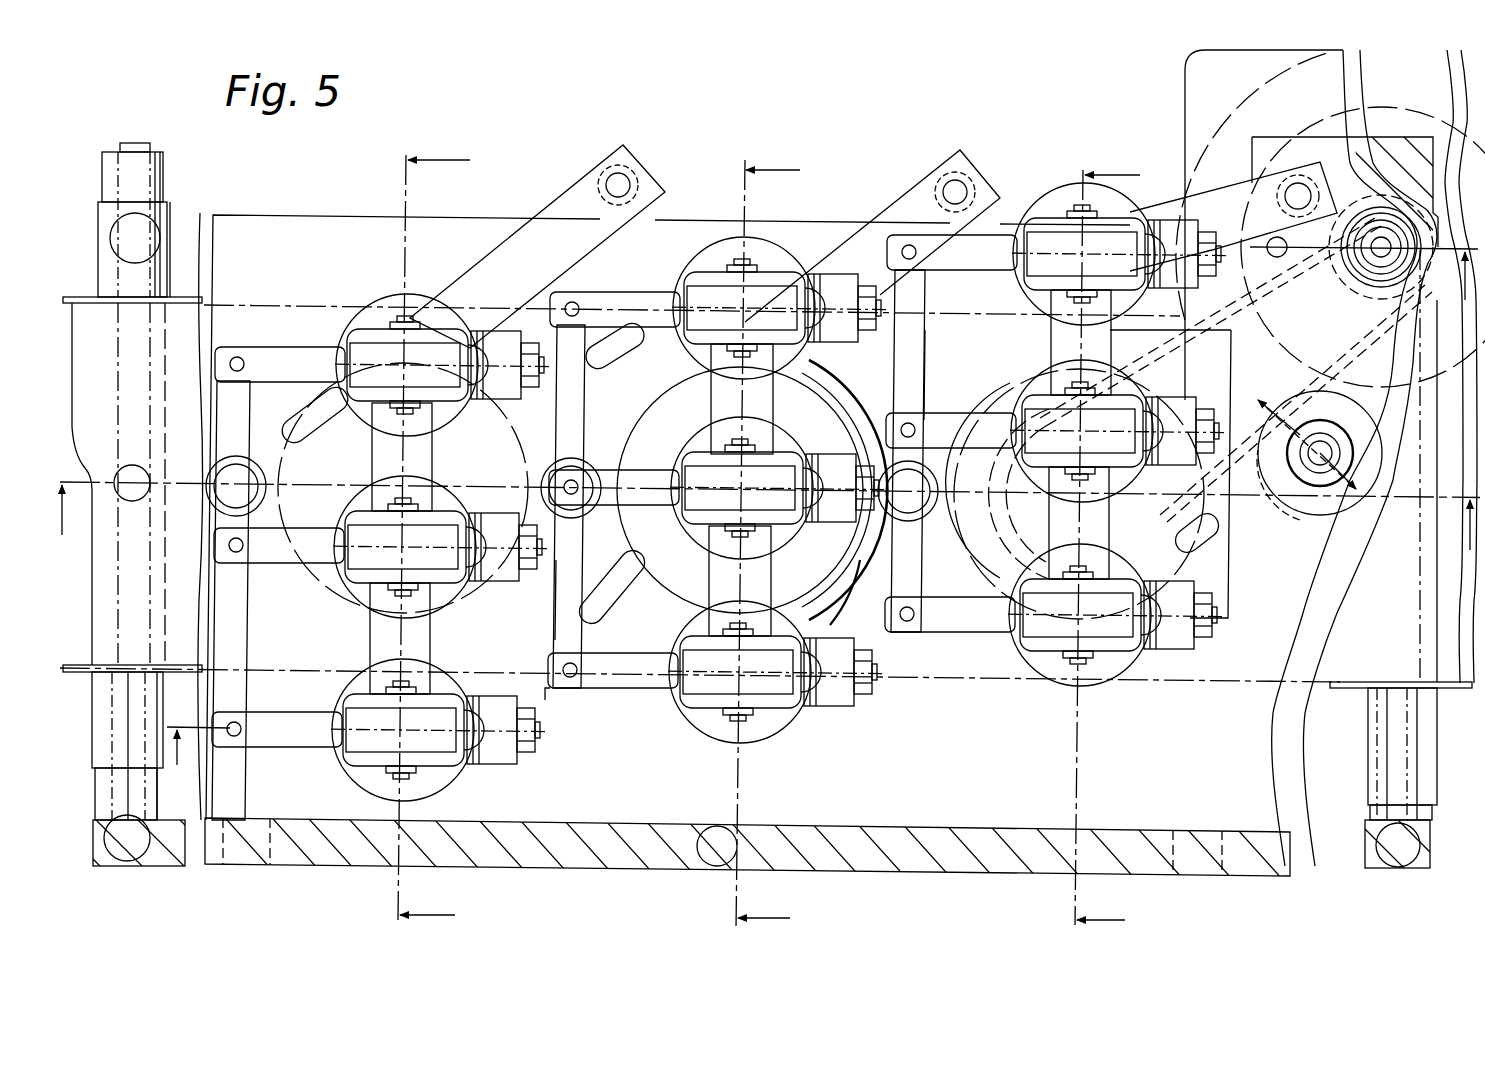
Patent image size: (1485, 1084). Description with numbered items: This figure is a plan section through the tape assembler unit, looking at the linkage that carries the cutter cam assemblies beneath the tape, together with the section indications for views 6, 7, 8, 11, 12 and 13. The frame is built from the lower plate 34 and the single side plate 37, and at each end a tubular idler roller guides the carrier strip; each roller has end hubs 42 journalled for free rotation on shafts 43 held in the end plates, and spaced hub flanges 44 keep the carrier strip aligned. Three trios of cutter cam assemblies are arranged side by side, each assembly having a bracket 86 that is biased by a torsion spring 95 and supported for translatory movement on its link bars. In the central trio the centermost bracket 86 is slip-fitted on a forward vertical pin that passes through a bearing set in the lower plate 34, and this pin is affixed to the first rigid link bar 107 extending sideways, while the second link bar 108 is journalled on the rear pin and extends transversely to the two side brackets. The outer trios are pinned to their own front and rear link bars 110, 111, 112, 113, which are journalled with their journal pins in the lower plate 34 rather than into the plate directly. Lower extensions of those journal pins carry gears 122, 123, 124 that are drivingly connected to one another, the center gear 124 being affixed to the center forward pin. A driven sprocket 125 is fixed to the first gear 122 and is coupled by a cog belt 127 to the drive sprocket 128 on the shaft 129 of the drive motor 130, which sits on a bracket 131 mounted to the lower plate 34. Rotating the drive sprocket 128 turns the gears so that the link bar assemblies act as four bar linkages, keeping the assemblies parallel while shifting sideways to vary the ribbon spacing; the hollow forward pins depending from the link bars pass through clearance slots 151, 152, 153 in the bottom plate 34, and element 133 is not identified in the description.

The lower plate 34 is at (258, 214).
The side plate 37 is at (918, 826).
The end hub 42 is at (93, 740).
The shaft 43 is at (110, 795).
The hub flange 44 is at (68, 298).
The bracket 86 is at (848, 525).
The torsion spring 95 is at (360, 410).
The first rigid link bar 107 is at (805, 552).
The second link bar 108 is at (556, 600).
The front link bar 110 is at (432, 627).
The rear link bar 111 is at (250, 645).
The front link bar 112 is at (1135, 500).
The rear link bar 113 is at (928, 376).
The first gear 122 is at (992, 566).
The gear 123 is at (600, 515).
The center gear 124 is at (335, 585).
The driven sprocket 125 is at (1210, 512).
The cog belt 127 is at (1320, 377).
The drive sprocket 128 is at (1366, 275).
The shaft 129 is at (1285, 256).
The drive motor 130 is at (1212, 122).
The bracket 131 is at (1185, 62).
The arc guide 133 is at (1300, 520).
The clearance slot 151 is at (548, 698).
The clearance slot 152 is at (862, 598).
The clearance slot 153 is at (1200, 556).
The section line 6- 6 is at (1309, 427).
The section line 7- 7 is at (766, 515).
The section line 8- 8 is at (821, 488).
The section line 11- 11 is at (762, 541).
The section line 12- 12 is at (1099, 547).
The section line 13- 13 is at (429, 535).